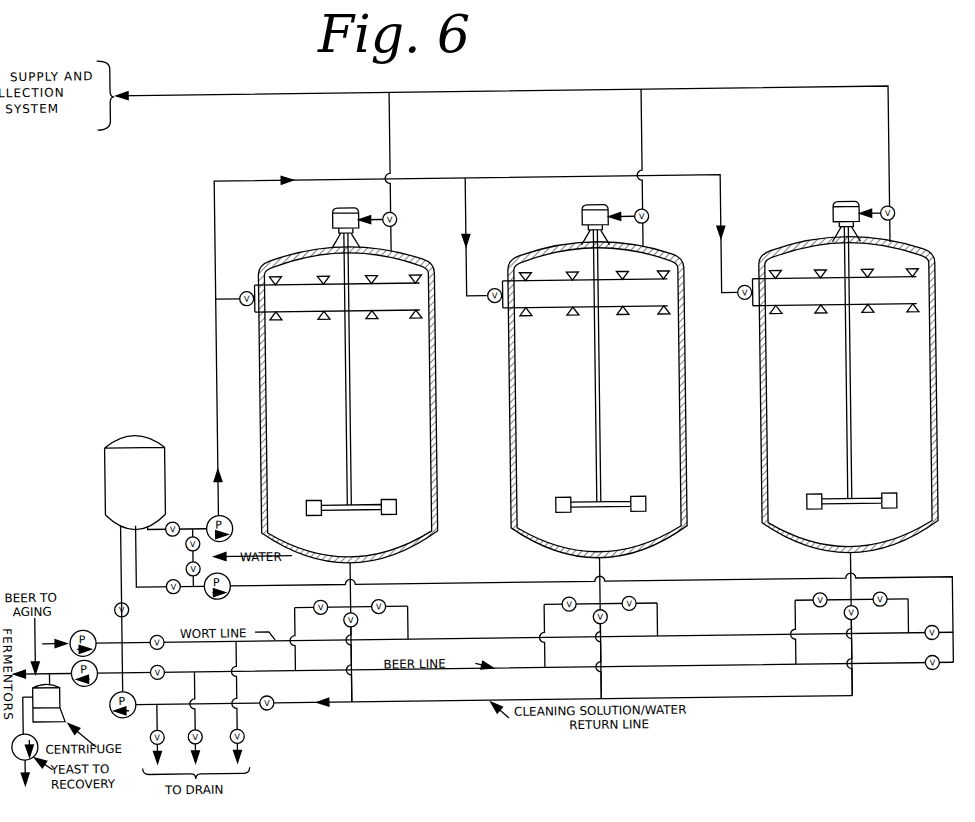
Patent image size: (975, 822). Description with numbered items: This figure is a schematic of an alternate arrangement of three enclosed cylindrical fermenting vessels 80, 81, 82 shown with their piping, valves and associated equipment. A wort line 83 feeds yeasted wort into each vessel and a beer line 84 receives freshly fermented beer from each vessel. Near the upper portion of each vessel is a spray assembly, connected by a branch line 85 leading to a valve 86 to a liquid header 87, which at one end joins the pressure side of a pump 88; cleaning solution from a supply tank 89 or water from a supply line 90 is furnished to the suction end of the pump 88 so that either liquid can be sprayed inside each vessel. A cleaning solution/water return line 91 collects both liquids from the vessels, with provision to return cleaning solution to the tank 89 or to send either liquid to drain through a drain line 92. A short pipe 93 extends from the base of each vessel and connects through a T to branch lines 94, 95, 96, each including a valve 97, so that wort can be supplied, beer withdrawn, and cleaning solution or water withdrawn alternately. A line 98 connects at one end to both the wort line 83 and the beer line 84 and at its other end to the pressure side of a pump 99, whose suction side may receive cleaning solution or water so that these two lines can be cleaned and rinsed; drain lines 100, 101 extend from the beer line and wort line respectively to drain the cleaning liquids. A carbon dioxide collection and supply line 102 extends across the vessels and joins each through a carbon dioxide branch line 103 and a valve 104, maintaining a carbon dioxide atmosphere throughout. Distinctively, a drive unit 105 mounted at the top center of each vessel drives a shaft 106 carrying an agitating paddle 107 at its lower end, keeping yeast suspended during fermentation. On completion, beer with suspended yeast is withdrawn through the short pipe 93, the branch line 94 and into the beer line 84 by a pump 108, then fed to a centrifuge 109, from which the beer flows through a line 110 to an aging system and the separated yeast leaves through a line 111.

The fermenting vessel 80 is at (437, 384).
The fermenting vessel 81 is at (687, 384).
The fermenting vessel 82 is at (937, 363).
The wort line 83 is at (478, 636).
The beer line 84 is at (518, 667).
The branch line 85 is at (238, 303).
The valve 86 is at (244, 290).
The liquid header 87 is at (216, 345).
The pump 88 is at (231, 516).
The supply tank 89 is at (166, 471).
The supply line 90 is at (240, 553).
The cleaning solution/water return line 91 is at (425, 701).
The drain line 92 is at (151, 714).
The short pipe 93 is at (352, 573).
The branch line 94 is at (298, 604).
The branch line 95 is at (410, 605).
The branch line 96 is at (351, 649).
The valve 97 is at (324, 603).
The line 98 is at (274, 582).
The pump 99 is at (229, 588).
The drain line 100 is at (193, 713).
The drain line 101 is at (236, 717).
The carbon dioxide collection and supply line 102 is at (703, 90).
The carbon dioxide branch line 103 is at (396, 193).
The valve 104 is at (400, 217).
The drive unit 105 is at (367, 198).
The shaft 106 is at (351, 401).
The agitating paddle 107 is at (372, 503).
The pump 108 is at (69, 661).
The centrifuge 109 is at (60, 710).
The line 110 is at (30, 666).
The line 111 is at (34, 735).